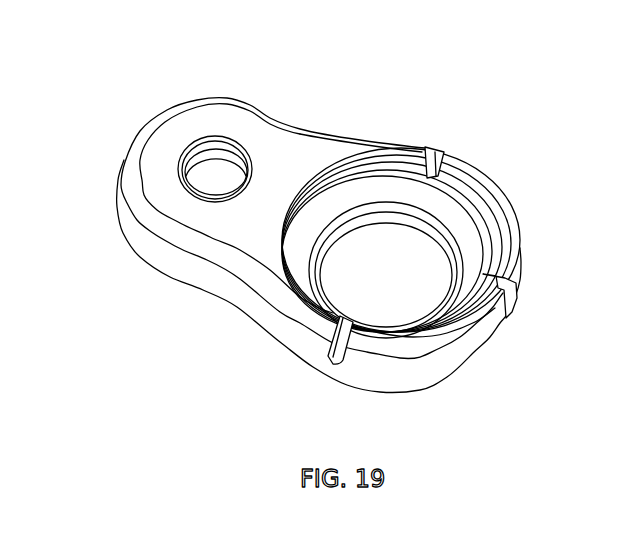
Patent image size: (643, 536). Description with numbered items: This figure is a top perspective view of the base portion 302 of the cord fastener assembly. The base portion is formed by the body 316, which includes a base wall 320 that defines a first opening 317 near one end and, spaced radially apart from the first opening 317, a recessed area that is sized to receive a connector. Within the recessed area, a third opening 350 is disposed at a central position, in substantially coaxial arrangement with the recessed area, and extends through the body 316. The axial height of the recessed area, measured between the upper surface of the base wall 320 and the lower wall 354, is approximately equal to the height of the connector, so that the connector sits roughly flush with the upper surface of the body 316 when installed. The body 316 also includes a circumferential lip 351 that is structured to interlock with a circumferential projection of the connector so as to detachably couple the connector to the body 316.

The cap assembly 302 is at (197, 90).
The body 316 is at (220, 273).
The first opening 317 is at (210, 178).
The base wall 320 is at (277, 150).
The third opening 350 is at (417, 252).
The circumferential lip 351 is at (427, 153).
The lower wall 354 is at (473, 238).